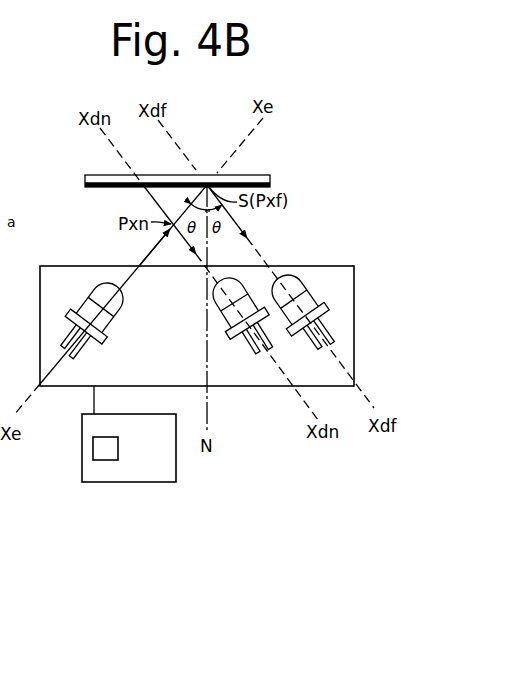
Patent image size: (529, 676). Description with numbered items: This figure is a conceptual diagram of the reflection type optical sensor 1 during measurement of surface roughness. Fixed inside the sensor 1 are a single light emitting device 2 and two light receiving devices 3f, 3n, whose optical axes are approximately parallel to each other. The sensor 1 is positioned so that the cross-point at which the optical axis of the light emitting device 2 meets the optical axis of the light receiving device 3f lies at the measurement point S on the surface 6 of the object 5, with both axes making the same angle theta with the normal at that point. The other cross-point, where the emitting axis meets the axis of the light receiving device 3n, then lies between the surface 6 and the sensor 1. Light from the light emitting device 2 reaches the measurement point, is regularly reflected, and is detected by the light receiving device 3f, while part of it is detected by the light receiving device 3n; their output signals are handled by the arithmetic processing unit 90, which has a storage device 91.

The reflection type optical sensor 1 is at (320, 266).
The light emitting device 2 is at (88, 303).
The light receiving device 3n is at (211, 318).
The light receiving device 3f is at (306, 298).
The object to be measured 5 is at (100, 175).
The surface of the object 6 is at (106, 187).
The arithmetic processing unit 90 is at (155, 482).
The storage device 91 is at (100, 460).